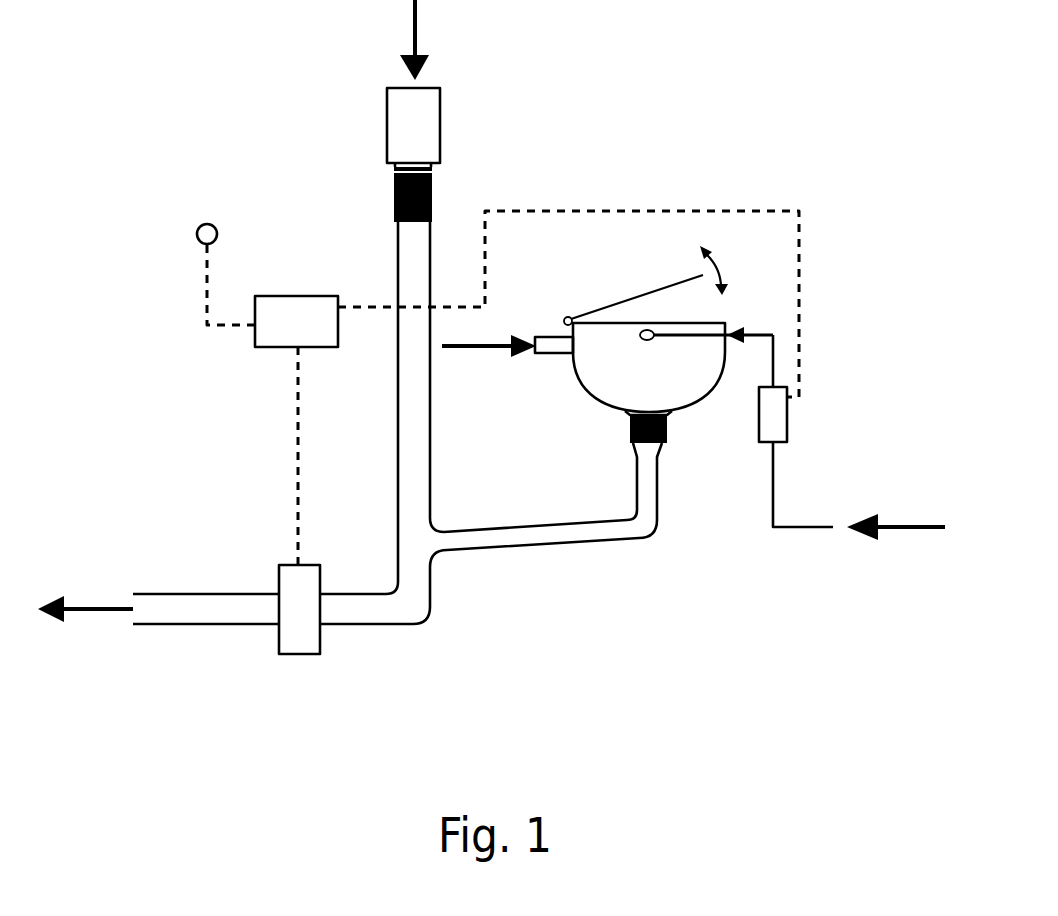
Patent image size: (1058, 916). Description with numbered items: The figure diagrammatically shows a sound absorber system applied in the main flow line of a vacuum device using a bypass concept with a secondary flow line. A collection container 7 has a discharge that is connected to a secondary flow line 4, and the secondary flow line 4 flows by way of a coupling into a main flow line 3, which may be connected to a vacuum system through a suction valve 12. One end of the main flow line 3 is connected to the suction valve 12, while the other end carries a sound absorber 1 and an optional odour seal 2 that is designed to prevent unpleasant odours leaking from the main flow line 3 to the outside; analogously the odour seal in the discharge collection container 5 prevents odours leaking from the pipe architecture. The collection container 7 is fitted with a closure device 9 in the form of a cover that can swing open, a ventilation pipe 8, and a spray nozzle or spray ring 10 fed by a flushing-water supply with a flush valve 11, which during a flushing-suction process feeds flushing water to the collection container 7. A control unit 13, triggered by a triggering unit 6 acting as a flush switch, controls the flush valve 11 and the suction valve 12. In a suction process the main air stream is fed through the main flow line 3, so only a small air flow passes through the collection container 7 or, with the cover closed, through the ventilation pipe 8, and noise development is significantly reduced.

The sound absorber 1 is at (386, 135).
The odour seal 2 is at (392, 205).
The main flow line 3 is at (363, 607).
The secondary flow line 4 is at (568, 540).
The discharge collection container 5 is at (655, 453).
The triggering unit 6 is at (207, 224).
The collection container 7 is at (588, 388).
The ventilation pipe 8 is at (553, 355).
The closure device 9 is at (625, 301).
The spray nozzle 10 is at (647, 341).
The flush valve 11 is at (770, 445).
The suction valve 12 is at (279, 580).
The control unit 13 is at (316, 296).